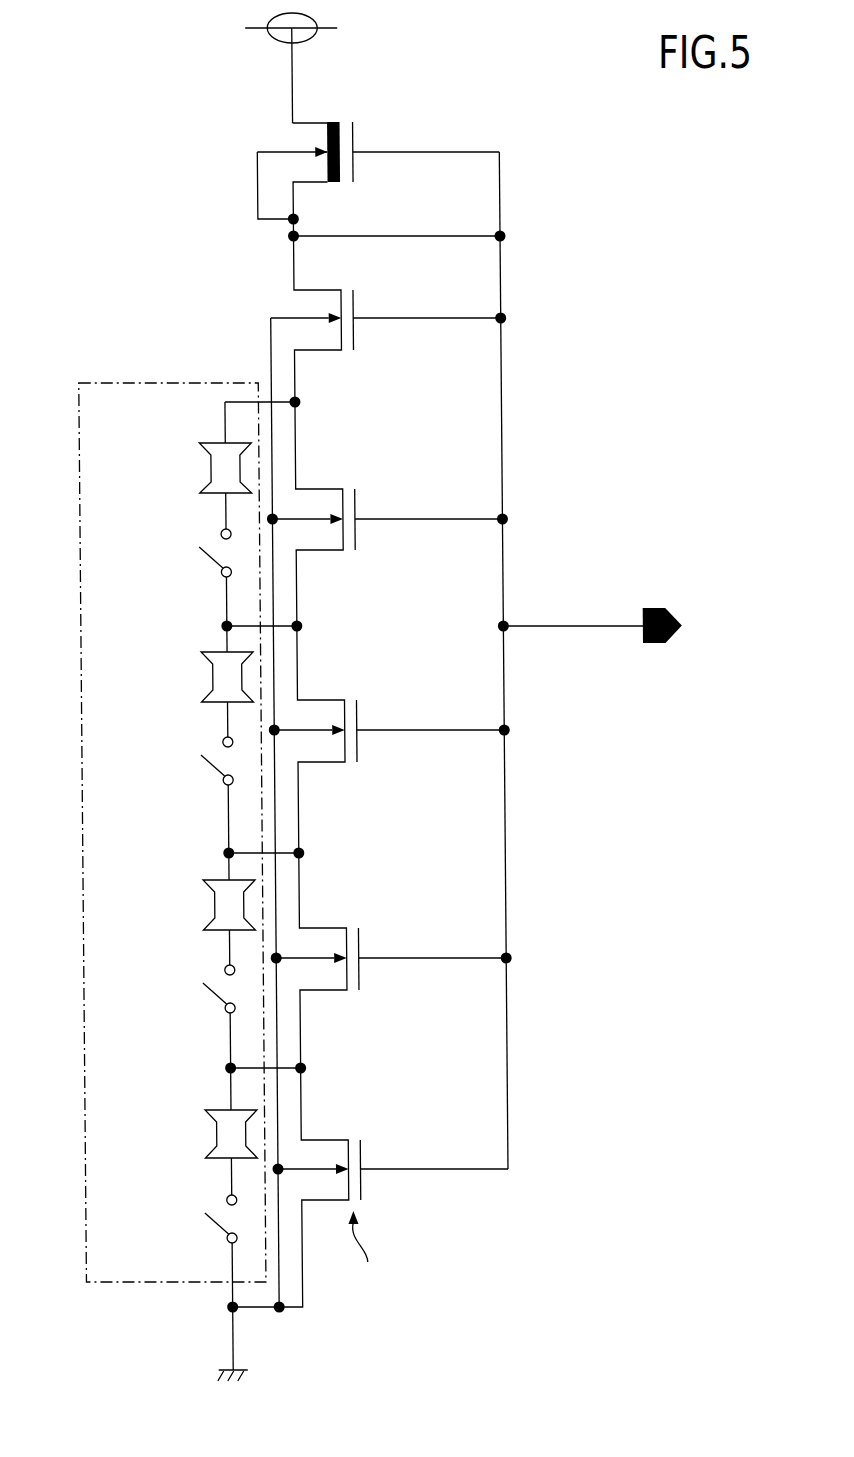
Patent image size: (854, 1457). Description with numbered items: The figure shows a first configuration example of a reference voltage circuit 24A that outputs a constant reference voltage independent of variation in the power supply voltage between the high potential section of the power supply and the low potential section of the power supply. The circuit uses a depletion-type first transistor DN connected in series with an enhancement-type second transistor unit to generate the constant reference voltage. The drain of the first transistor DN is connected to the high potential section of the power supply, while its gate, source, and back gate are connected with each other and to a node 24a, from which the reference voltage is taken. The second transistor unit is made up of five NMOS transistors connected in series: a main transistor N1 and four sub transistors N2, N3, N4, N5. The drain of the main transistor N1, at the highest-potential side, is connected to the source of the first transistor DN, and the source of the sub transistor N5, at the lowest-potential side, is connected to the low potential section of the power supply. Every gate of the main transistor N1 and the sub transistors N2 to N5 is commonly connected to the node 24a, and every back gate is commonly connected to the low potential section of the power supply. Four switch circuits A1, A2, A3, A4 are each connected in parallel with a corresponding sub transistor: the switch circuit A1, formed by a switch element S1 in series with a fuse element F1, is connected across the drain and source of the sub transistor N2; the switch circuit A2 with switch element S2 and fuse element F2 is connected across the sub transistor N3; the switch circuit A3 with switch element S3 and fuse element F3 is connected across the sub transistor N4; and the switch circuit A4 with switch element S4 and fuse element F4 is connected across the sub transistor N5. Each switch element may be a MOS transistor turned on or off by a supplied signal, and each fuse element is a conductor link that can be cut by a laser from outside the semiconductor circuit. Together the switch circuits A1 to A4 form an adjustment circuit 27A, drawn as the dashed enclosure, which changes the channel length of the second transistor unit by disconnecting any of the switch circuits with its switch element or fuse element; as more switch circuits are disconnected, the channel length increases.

The reference voltage circuit 24A is at (114, 66).
The adjustment circuit 27A is at (163, 383).
The node 24a is at (501, 621).
The first transistor DN is at (353, 132).
The main transistor N1 is at (352, 297).
The sub transistor N2 is at (352, 496).
The sub transistor N3 is at (352, 707).
The sub transistor N4 is at (352, 935).
The sub transistor N5 is at (352, 1147).
The fuse element F1 is at (211, 466).
The fuse element F2 is at (211, 675).
The fuse element F3 is at (211, 903).
The fuse element F4 is at (211, 1133).
The switch element S1 is at (199, 558).
The switch element S2 is at (199, 766).
The switch element S3 is at (199, 994).
The switch element S4 is at (199, 1224).
The switch circuit A1 is at (143, 457).
The switch circuit A2 is at (143, 665).
The switch circuit A3 is at (143, 893).
The switch circuit A4 is at (143, 1122).